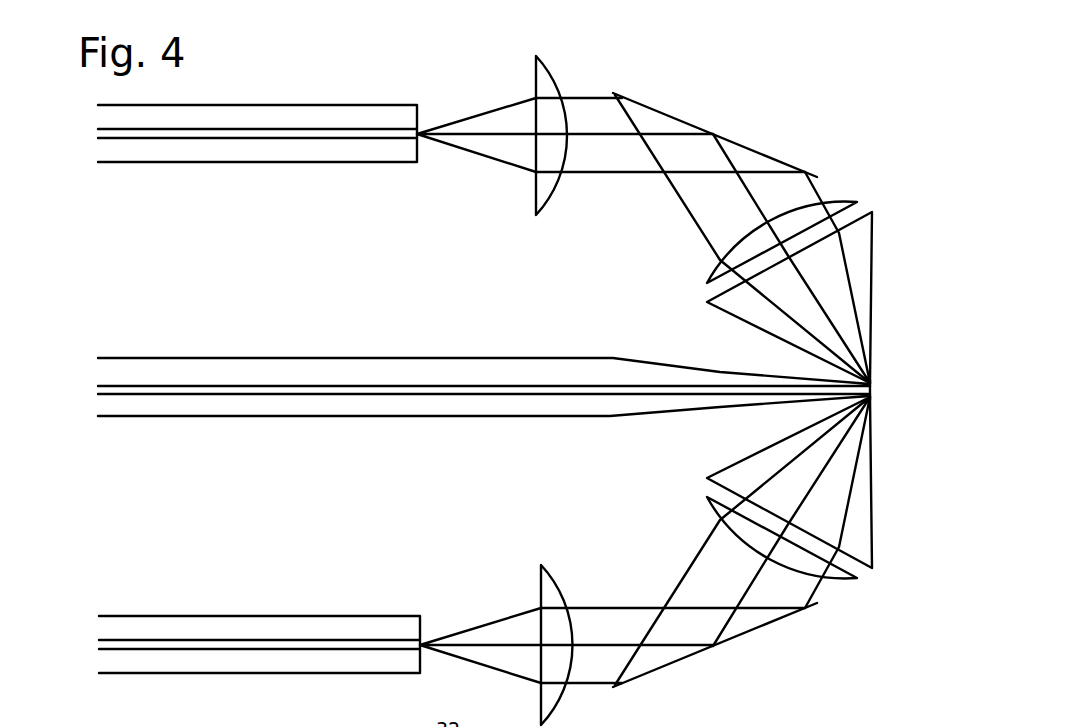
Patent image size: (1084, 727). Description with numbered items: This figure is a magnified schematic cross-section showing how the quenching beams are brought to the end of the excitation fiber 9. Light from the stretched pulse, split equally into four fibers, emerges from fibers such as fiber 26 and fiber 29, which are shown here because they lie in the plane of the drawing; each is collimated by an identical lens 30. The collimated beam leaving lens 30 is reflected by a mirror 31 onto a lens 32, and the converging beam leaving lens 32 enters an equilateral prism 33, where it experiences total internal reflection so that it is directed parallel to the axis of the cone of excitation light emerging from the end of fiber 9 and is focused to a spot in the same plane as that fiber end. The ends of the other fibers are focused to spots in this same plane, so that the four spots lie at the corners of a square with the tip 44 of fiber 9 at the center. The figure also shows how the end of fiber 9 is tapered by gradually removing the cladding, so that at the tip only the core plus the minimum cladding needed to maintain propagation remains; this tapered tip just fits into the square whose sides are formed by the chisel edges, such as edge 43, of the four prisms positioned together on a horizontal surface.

The fiber 9 is at (217, 355).
The fiber 26 is at (333, 100).
The fiber 29 is at (337, 617).
The lens 30 is at (533, 89).
The mirror 31 is at (840, 577).
The lens 32 is at (840, 199).
The equilateral prism 33 is at (873, 266).
The chisel edge 43 is at (873, 382).
The tip 44 is at (872, 388).